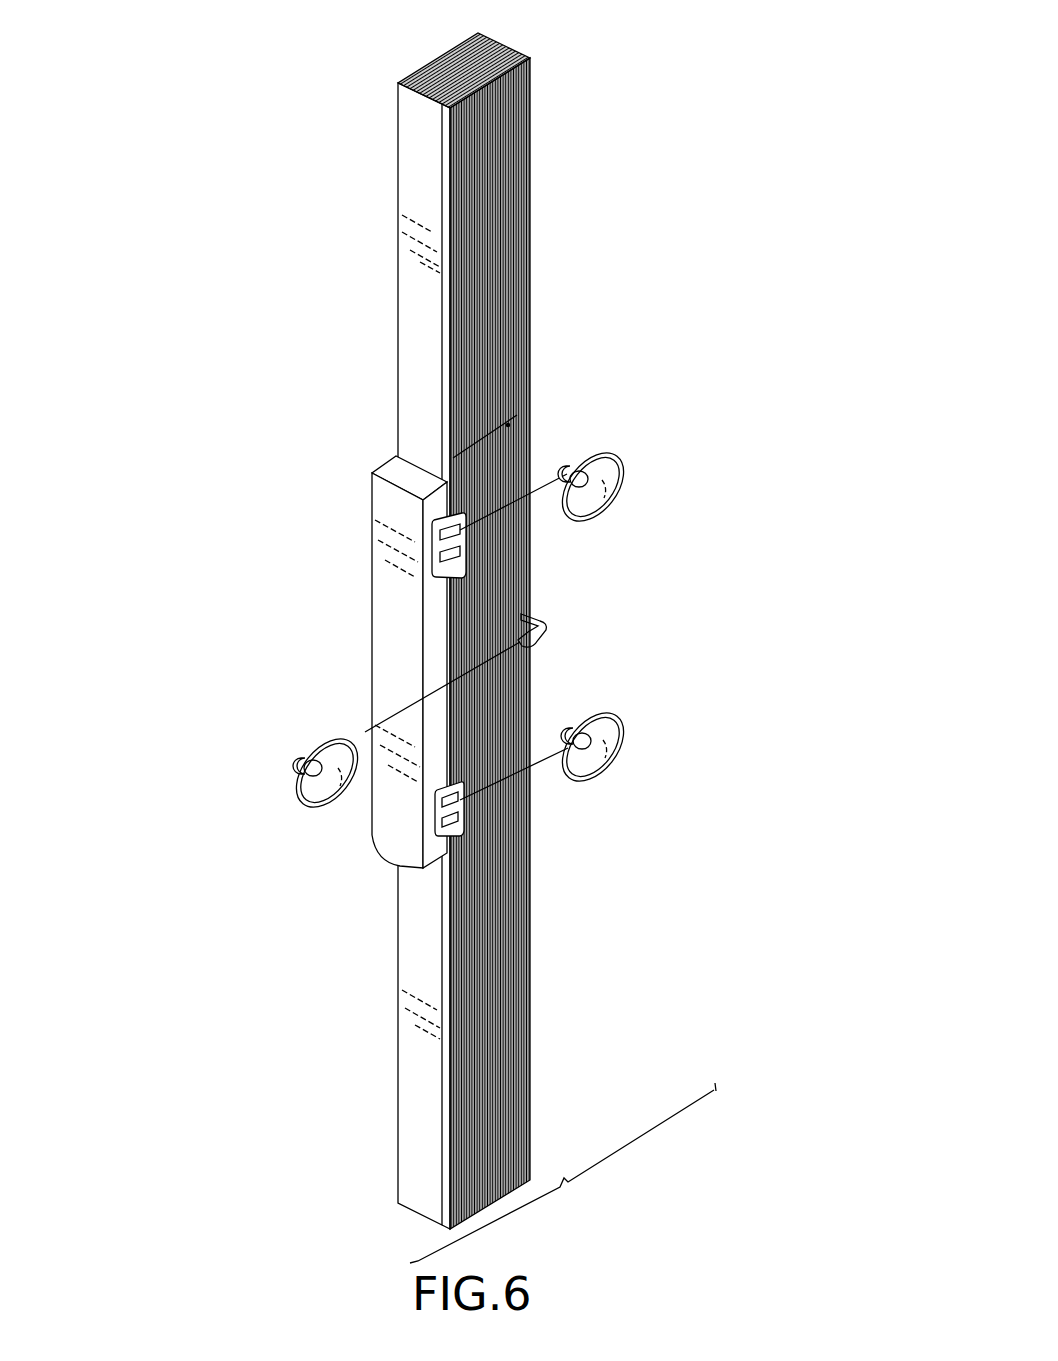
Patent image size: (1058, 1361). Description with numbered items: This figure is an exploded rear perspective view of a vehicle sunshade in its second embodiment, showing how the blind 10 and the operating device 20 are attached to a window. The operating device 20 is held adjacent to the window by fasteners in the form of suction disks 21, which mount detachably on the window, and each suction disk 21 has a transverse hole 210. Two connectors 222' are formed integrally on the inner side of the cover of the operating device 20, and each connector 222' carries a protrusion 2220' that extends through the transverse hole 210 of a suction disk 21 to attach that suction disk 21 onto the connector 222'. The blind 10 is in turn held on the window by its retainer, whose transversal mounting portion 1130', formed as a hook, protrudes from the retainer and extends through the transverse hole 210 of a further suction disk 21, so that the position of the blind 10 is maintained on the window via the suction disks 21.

The blind 10 is at (418, 58).
The operating device 20 is at (364, 528).
The suction disk 21 is at (568, 465).
The transverse hole 210 is at (565, 483).
The connector 222' is at (378, 674).
The protrusion 2220' is at (366, 675).
The transversal mounting portion 1130' is at (588, 643).